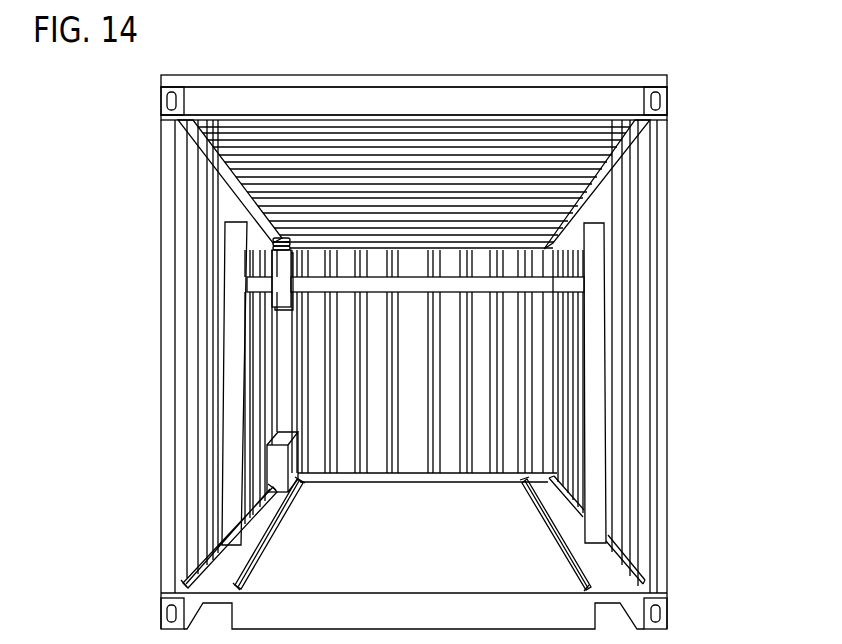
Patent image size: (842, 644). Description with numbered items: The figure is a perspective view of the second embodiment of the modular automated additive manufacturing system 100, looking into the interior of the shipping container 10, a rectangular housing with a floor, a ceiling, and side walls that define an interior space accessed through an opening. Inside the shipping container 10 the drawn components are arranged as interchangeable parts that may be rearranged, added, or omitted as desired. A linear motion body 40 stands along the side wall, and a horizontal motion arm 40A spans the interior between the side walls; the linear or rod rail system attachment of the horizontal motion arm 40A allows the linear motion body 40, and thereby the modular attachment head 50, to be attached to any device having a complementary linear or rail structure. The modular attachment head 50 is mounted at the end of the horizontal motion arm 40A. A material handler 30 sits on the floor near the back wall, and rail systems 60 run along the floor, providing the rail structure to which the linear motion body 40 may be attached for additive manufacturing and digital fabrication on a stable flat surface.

The modular automated additive manufacturing system 100 is at (712, 77).
The shipping container 10 is at (666, 328).
The material handler 30 is at (281, 472).
The linear motion body 40 is at (230, 393).
The horizontal motion arm 40A is at (560, 284).
The modular attachment head 50 is at (280, 283).
The rail system 60 is at (227, 566).